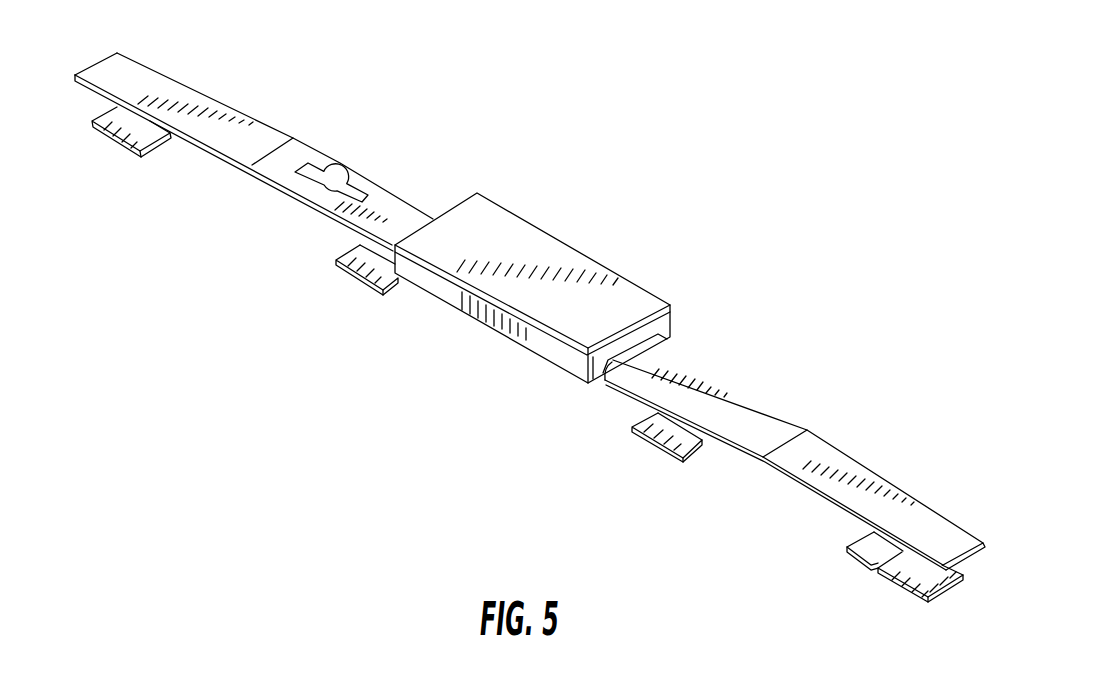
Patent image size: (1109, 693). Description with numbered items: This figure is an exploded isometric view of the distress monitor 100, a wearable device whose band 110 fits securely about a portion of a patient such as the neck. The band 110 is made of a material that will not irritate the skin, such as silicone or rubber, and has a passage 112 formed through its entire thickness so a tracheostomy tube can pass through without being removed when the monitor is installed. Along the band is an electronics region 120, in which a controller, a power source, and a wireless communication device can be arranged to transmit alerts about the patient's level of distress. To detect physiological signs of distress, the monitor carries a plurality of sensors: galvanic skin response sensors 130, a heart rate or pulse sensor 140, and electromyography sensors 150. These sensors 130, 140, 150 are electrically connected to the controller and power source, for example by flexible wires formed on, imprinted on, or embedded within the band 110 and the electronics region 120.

The distress monitor 100 is at (753, 245).
The band 110 is at (737, 385).
The passage 112 is at (297, 172).
The electronics region 120 is at (446, 302).
The galvanic skin response sensors 130 is at (362, 282).
The heart rate sensor 140 is at (860, 564).
The electromyography sensors 150 is at (133, 157).